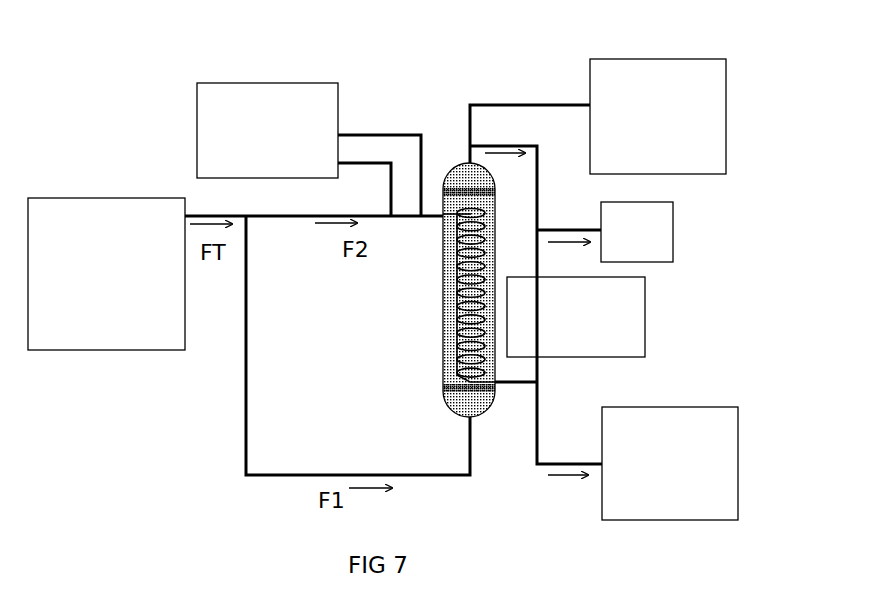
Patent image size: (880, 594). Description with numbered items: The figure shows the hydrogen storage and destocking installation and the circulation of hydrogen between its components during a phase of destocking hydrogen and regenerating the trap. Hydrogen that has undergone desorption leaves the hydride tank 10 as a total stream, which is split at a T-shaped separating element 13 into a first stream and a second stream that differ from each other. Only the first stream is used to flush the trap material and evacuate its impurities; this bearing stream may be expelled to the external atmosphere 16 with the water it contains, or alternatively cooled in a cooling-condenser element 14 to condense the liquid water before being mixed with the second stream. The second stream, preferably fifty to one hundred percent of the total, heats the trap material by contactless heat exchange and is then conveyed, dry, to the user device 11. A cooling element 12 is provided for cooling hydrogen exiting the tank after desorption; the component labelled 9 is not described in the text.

The gas outlet unit 9 is at (662, 75).
The hydride tank 10 is at (97, 212).
The user device 11 is at (692, 420).
The cooling element 12 is at (272, 100).
The separating element 13 is at (253, 217).
The cooling-condenser element 14 is at (637, 320).
The external atmosphere 16 is at (657, 217).